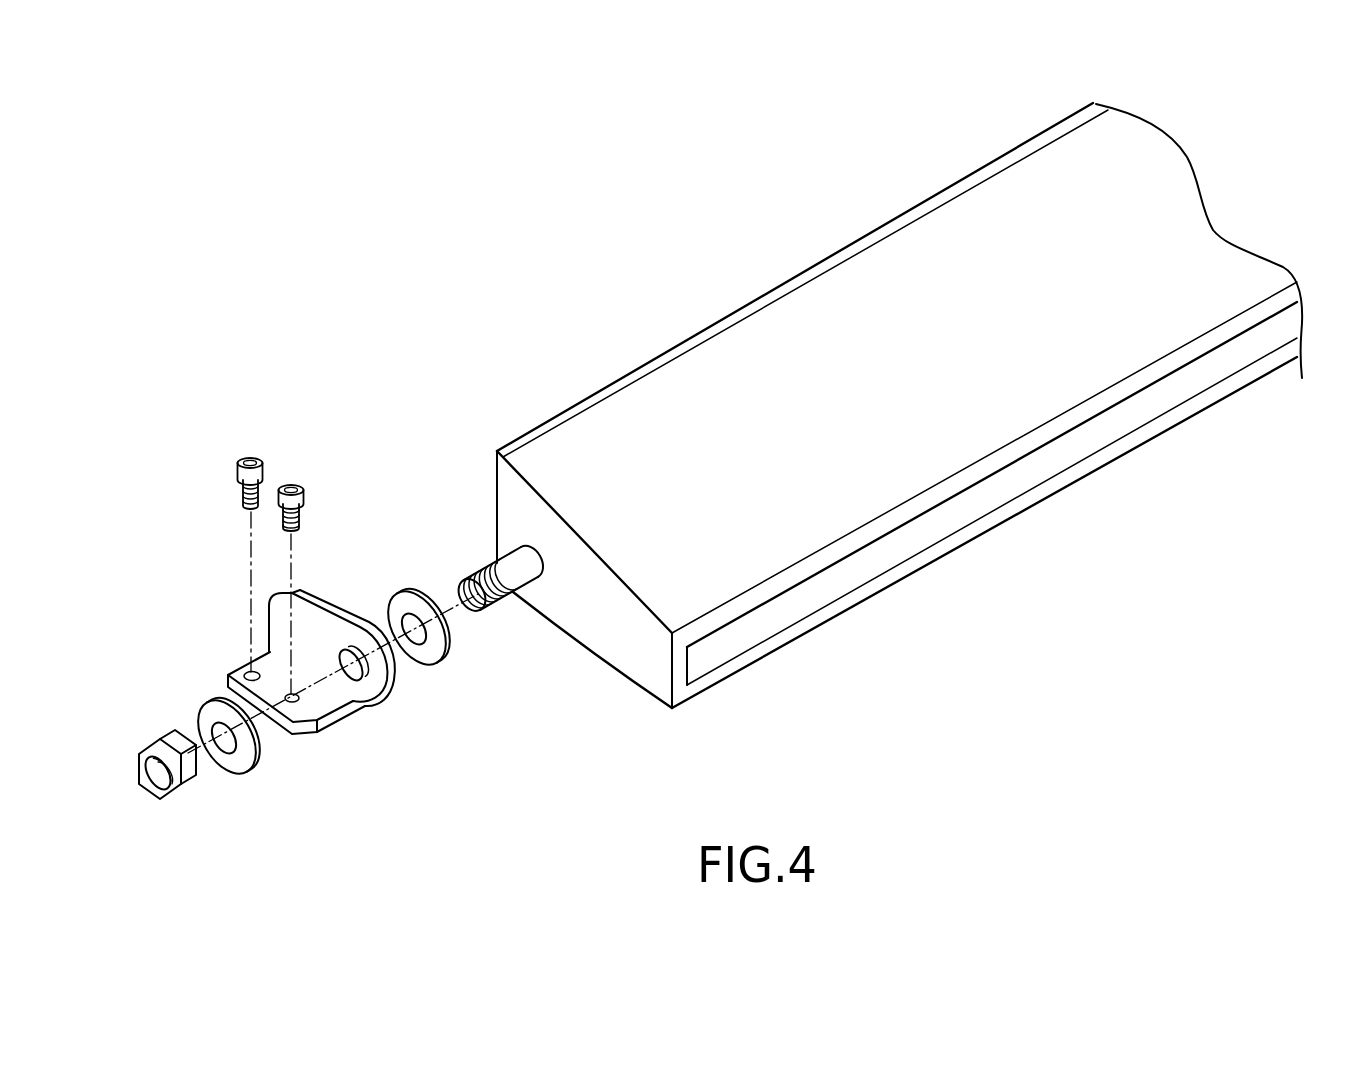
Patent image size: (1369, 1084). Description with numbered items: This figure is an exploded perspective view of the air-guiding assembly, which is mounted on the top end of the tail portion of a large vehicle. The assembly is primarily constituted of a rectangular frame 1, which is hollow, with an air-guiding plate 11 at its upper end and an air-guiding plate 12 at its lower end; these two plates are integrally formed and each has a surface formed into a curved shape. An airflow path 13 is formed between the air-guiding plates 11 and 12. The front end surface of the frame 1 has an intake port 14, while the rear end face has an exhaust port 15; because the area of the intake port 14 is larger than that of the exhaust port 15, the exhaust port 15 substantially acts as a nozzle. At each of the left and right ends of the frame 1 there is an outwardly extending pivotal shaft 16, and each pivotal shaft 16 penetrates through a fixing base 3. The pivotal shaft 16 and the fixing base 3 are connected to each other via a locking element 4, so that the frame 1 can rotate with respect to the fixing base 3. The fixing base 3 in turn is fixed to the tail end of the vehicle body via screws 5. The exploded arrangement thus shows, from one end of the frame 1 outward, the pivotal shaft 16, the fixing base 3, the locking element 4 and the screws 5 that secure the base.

The frame 1 is at (645, 289).
The fixing base 3 is at (275, 628).
The locking element 4 is at (140, 793).
The screws 5 is at (239, 491).
The air-guiding plate 11 is at (796, 323).
The air-guiding plate 12 is at (775, 643).
The airflow path 13 is at (988, 490).
The intake port 14 is at (490, 489).
The exhaust port 15 is at (832, 587).
The pivotal shaft 16 is at (497, 591).